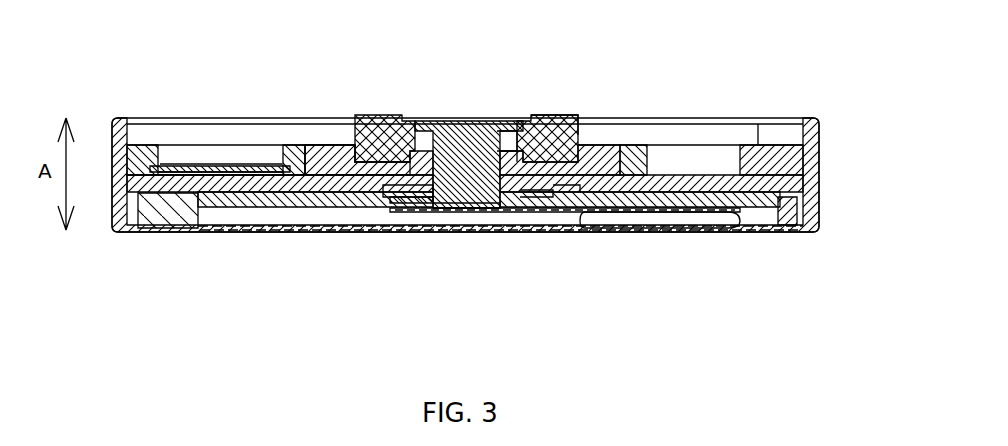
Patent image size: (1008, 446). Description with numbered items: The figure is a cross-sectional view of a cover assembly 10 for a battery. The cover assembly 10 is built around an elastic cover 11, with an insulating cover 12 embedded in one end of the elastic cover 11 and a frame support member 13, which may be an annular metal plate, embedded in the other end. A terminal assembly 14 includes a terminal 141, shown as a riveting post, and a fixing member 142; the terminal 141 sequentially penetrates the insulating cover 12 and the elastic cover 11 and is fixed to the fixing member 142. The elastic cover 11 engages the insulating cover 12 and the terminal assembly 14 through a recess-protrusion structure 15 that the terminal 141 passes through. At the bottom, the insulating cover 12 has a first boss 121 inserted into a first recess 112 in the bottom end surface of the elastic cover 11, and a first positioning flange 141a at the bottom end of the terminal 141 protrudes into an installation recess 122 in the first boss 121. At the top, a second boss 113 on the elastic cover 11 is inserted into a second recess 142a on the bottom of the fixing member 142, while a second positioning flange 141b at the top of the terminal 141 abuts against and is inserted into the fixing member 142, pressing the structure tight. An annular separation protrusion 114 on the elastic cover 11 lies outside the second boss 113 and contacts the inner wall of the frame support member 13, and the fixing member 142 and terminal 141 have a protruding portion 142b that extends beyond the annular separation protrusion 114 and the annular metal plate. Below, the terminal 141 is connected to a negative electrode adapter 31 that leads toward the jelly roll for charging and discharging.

The cover assembly 10 is at (312, 37).
The elastic cover 11 is at (806, 178).
The insulating cover 12 is at (798, 205).
The frame support member 13 is at (817, 142).
The terminal assembly 14 is at (478, 63).
The recess-protrusion structure 15 is at (518, 185).
The negative electrode adapter 31 is at (645, 229).
The first recess 112 is at (378, 206).
The second boss 113 is at (417, 206).
The annular separation protrusion 114 is at (331, 152).
The first boss 121 is at (551, 186).
The installation recess 122 is at (538, 190).
The terminal 141 is at (442, 121).
The first positioning flange 141a is at (502, 200).
The second positioning flange 141b is at (505, 122).
The fixing member 142 is at (378, 116).
The second recess 142a is at (520, 172).
The protruding portion 142b is at (547, 125).